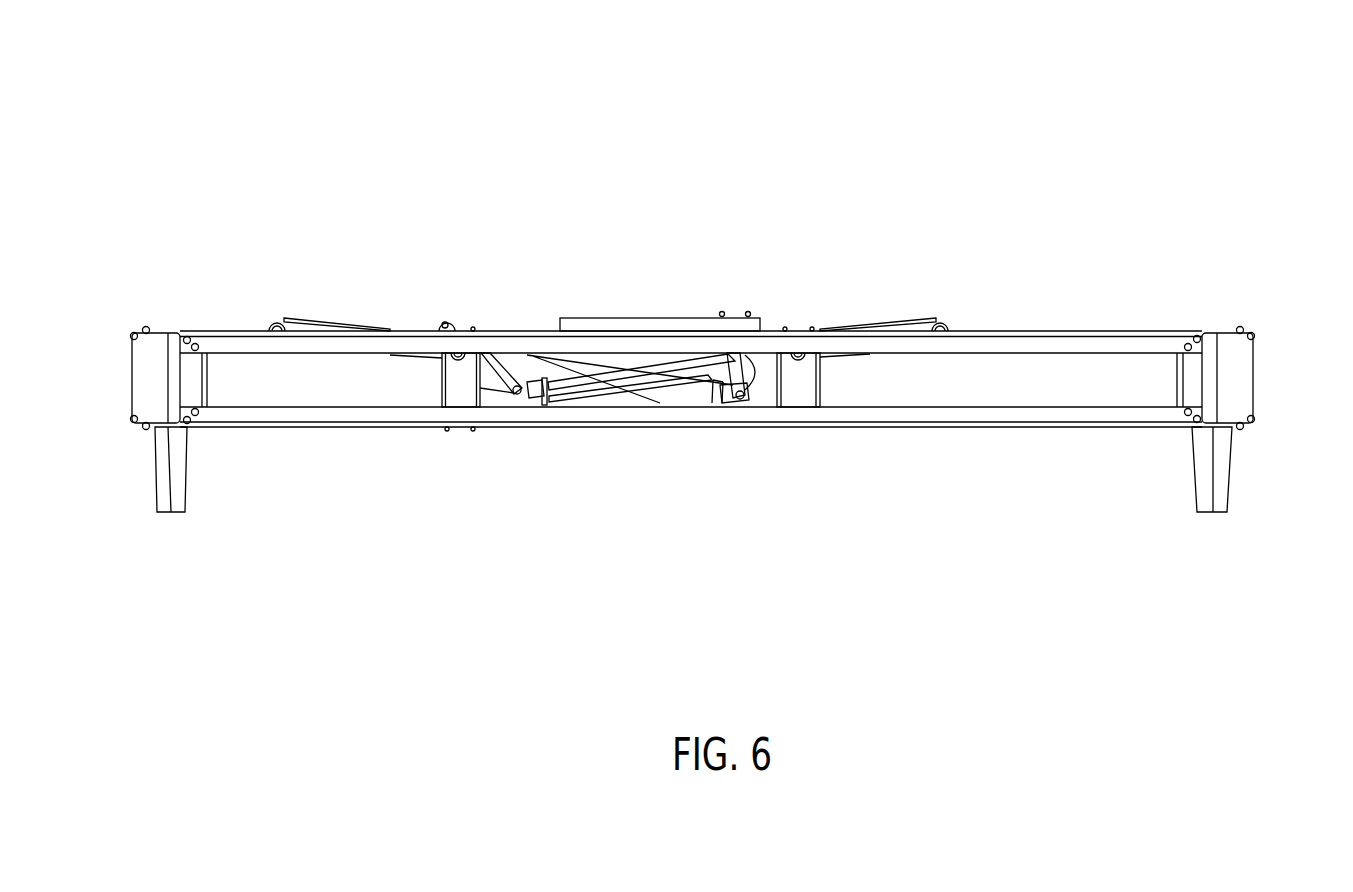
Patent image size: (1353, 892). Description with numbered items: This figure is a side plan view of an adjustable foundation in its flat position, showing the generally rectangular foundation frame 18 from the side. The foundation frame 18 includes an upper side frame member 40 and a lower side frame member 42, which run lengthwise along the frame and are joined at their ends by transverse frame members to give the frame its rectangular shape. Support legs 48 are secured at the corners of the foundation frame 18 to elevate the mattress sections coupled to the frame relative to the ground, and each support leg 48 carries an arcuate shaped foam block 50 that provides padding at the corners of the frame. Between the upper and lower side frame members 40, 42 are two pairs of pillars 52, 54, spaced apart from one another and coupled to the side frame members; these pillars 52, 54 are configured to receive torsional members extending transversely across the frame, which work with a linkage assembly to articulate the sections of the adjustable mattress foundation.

The foundation frame 18 is at (1075, 153).
The upper side frame member 40 is at (1050, 345).
The lower side frame member 42 is at (985, 418).
The support leg 48 is at (112, 456).
The arcuate shaped foam block 50 is at (142, 380).
The pillar 52 is at (820, 388).
The pillar 54 is at (440, 388).